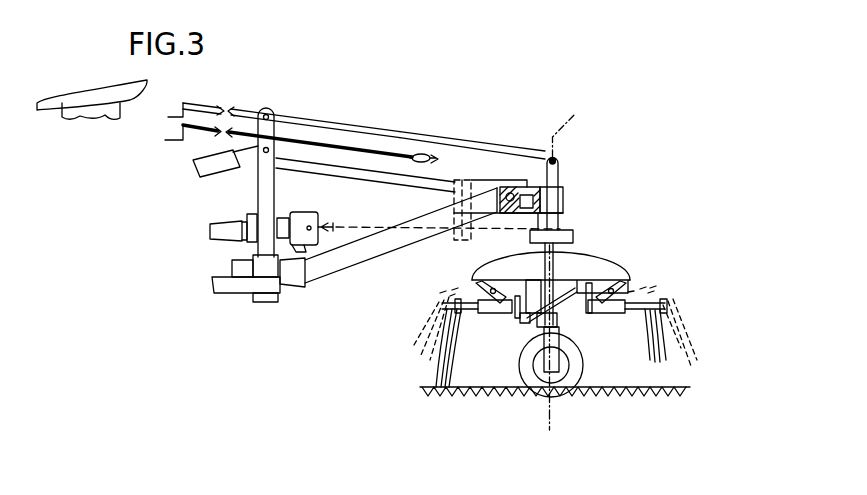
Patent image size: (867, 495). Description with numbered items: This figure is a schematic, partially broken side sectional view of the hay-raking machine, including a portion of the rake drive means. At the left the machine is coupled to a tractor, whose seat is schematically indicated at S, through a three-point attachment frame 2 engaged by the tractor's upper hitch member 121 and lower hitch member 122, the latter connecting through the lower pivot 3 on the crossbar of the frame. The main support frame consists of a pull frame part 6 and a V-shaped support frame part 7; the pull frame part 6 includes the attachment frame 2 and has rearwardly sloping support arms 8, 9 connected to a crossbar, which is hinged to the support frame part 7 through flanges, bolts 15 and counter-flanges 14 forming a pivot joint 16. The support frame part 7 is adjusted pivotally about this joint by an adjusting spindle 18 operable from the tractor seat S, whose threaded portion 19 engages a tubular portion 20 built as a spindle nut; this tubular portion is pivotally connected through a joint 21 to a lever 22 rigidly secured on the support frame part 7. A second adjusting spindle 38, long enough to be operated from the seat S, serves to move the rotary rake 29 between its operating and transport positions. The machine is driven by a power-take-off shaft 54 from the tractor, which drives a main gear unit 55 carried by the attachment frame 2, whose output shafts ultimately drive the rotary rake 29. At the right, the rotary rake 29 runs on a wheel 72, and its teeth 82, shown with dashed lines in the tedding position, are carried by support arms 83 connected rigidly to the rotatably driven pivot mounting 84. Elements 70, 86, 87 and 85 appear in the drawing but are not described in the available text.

The tractor seat S is at (98, 92).
The adjusting spindle 18 is at (293, 118).
The threaded portion 19 is at (363, 130).
The adjusting spindle 38 is at (390, 148).
The tubular portion 20 is at (451, 141).
The bolt 15 is at (504, 193).
The pivot joint 16 is at (512, 195).
The axis line 70 is at (575, 259).
The joint 21 is at (561, 160).
The lever 22 is at (560, 170).
The support frame part 7 is at (565, 200).
The pivot mounting 84 is at (580, 262).
The rotary rake 29 is at (603, 255).
The links 86 is at (602, 271).
The upper hitch member 121 is at (193, 165).
The three-point attachment frame 2 is at (258, 193).
The main gear unit 55 is at (301, 218).
The support arm 9 is at (368, 178).
The power-take-off shaft 54 is at (210, 232).
The counter-flange 14 is at (468, 234).
The lower hitch member 122 is at (212, 282).
The lower pivot 3 is at (270, 284).
The support arm 8 is at (336, 256).
The pull frame part 6 is at (370, 262).
The support arm 83 is at (443, 304).
The shaft 87 is at (541, 281).
The tie rod 85 is at (512, 322).
The teeth 82 is at (433, 375).
The wheel 72 is at (574, 377).